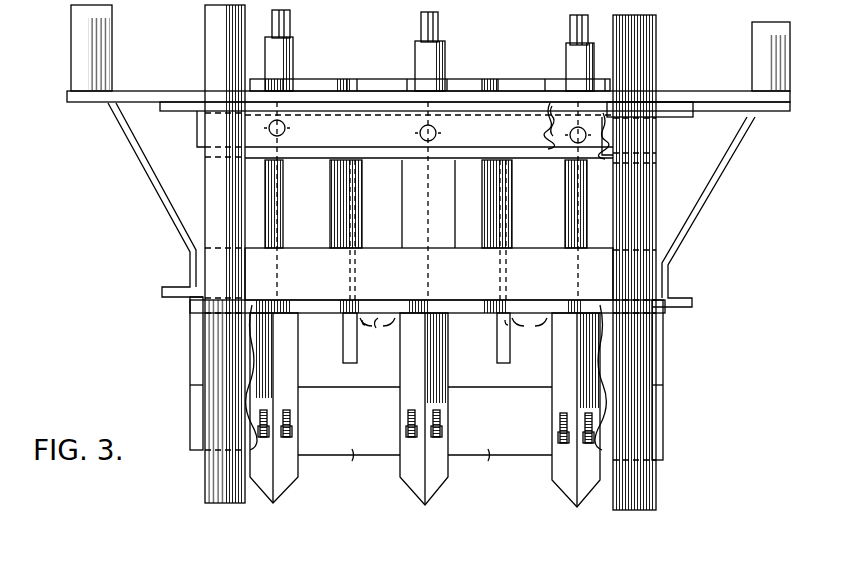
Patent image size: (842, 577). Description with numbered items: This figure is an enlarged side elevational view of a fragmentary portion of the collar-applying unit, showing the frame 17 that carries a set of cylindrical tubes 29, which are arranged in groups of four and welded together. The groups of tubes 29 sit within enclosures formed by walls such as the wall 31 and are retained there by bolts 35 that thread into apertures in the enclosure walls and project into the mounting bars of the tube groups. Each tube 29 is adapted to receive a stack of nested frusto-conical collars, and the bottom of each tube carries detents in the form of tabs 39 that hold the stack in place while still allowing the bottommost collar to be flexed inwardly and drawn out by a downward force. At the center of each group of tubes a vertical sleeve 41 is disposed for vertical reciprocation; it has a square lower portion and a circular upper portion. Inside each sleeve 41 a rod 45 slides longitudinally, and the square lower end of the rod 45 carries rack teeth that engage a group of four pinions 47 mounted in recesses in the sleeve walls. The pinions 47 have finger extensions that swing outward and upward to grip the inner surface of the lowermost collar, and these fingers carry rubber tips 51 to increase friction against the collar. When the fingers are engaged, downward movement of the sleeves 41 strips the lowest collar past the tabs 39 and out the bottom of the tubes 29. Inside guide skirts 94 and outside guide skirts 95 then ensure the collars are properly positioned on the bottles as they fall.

The frame 17 is at (578, 105).
The cylindrical tube 29 is at (288, 256).
The enclosure wall 31 is at (376, 158).
The bolt 35 is at (287, 128).
The tab 39 is at (418, 322).
The vertical sleeve 41 is at (293, 63).
The rod 45 is at (290, 23).
The pinion 47 is at (285, 410).
The rubber tip 51 is at (292, 431).
The inside guide skirt 94 is at (425, 434).
The outside guide skirt 95 is at (257, 340).